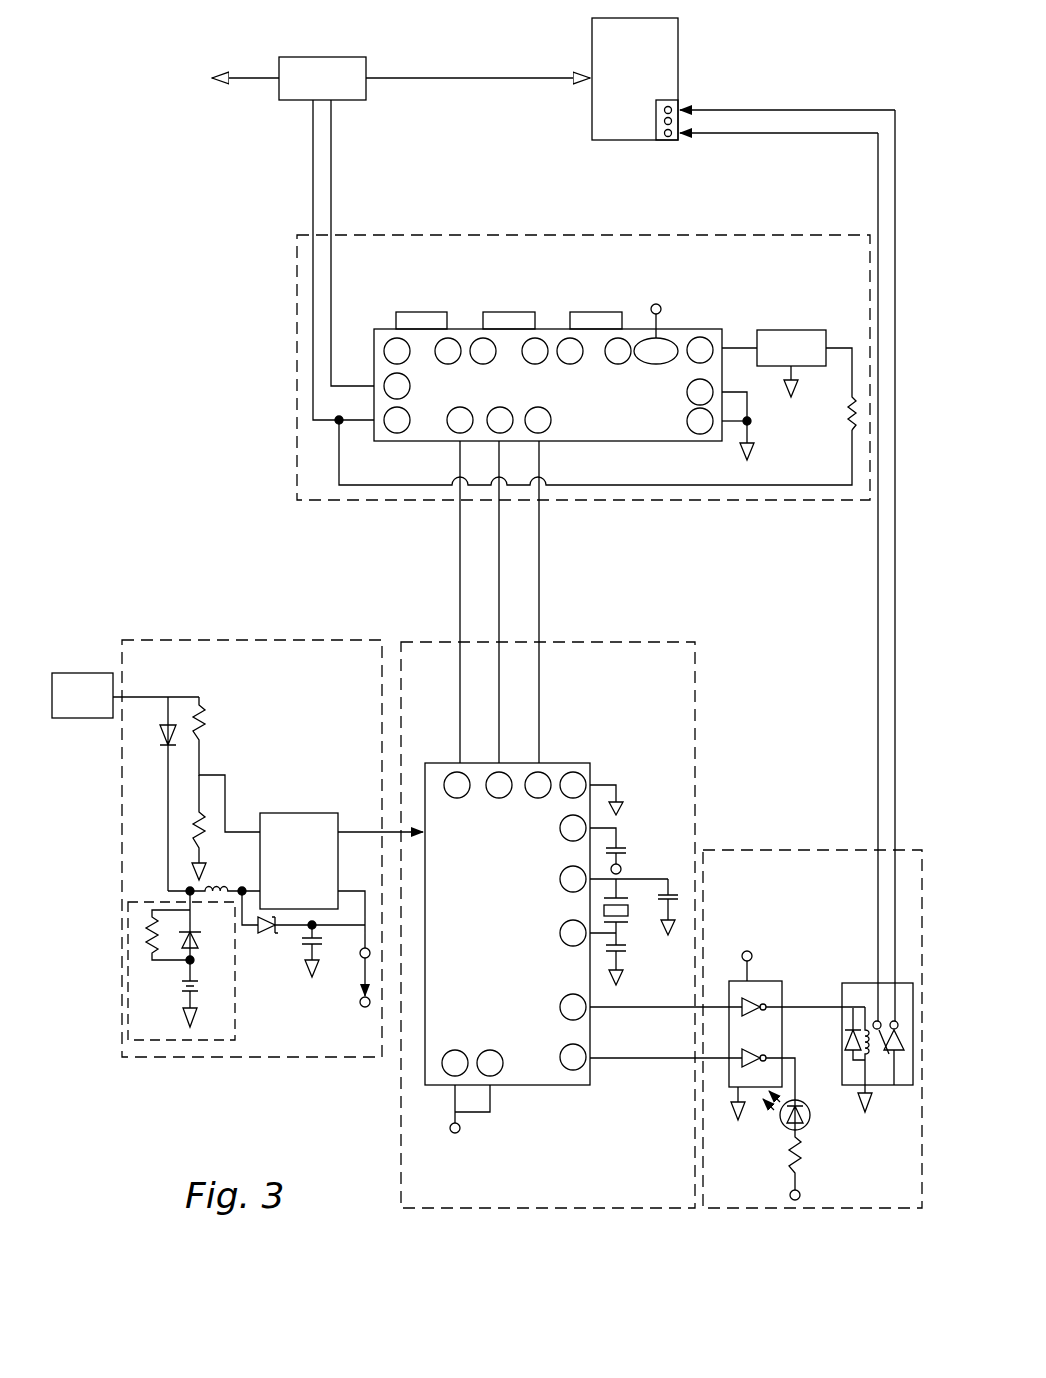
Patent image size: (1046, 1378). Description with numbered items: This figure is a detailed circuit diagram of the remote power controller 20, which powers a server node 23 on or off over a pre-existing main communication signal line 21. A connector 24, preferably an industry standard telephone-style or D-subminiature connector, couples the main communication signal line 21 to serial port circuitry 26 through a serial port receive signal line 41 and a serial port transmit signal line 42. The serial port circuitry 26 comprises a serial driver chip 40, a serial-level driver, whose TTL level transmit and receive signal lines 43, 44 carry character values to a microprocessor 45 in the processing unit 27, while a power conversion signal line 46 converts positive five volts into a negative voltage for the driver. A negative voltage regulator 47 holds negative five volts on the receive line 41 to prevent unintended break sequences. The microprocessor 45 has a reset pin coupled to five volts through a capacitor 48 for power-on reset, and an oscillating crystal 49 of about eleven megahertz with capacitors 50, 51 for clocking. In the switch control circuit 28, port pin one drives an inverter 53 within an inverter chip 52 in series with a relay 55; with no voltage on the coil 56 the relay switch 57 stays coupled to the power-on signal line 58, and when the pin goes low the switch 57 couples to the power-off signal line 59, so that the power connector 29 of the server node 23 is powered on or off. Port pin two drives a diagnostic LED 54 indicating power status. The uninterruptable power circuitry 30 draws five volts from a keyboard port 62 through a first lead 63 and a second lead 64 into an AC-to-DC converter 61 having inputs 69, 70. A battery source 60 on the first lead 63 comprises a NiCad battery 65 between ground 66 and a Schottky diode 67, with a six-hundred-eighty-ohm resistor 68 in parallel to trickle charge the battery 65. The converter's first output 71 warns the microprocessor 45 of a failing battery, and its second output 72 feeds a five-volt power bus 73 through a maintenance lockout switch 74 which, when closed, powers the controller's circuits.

The remote power controller 20 is at (258, 325).
The main communication signal line 21 is at (472, 78).
The server node 23 is at (623, 50).
The connector 24 is at (335, 90).
The serial port circuitry 26 is at (861, 272).
The processing unit 27 is at (688, 677).
The switch control circuit 28 is at (737, 886).
The power connector 29 is at (750, 110).
The uninterruptable power circuitry 30 is at (375, 676).
The serial driver chip 40 is at (655, 397).
The serial port receive signal line 41 is at (312, 160).
The serial port transmit signal line 42 is at (332, 160).
The TTL level transmit signal line 43 is at (460, 537).
The TTL level receive signal line 44 is at (499, 553).
The microprocessor 45 is at (458, 977).
The power conversion signal line 46 is at (540, 537).
The negative voltage regulator 47 is at (804, 361).
The capacitor 48 is at (625, 834).
The oscillating crystal 49 is at (627, 927).
The capacitor 50 is at (628, 960).
The capacitor 51 is at (679, 886).
The inverter chip 52 is at (729, 1068).
The inverter 53 is at (797, 1035).
The diagnostic LED 54 is at (796, 1145).
The relay 55 is at (860, 983).
The coil 56 is at (866, 1052).
The relay switch 57 is at (894, 1068).
The power-on signal line 58 is at (878, 611).
The power-off signal line 59 is at (895, 578).
The battery source 60 is at (236, 1013).
The AC-to-DC converter 61 is at (293, 849).
The keyboard port 62 is at (95, 706).
The first lead 63 is at (168, 830).
The second lead 64 is at (200, 763).
The NiCad battery 65 is at (203, 984).
The ground 66 is at (204, 1018).
The Schottky diode 67 is at (202, 943).
The resistor 68 is at (141, 950).
The first input 69 is at (224, 827).
The second input 70 is at (214, 880).
The first output 71 is at (380, 819).
The second output 72 is at (307, 906).
The five-volt power bus 73 is at (363, 989).
The maintenance lockout switch 74 is at (330, 953).